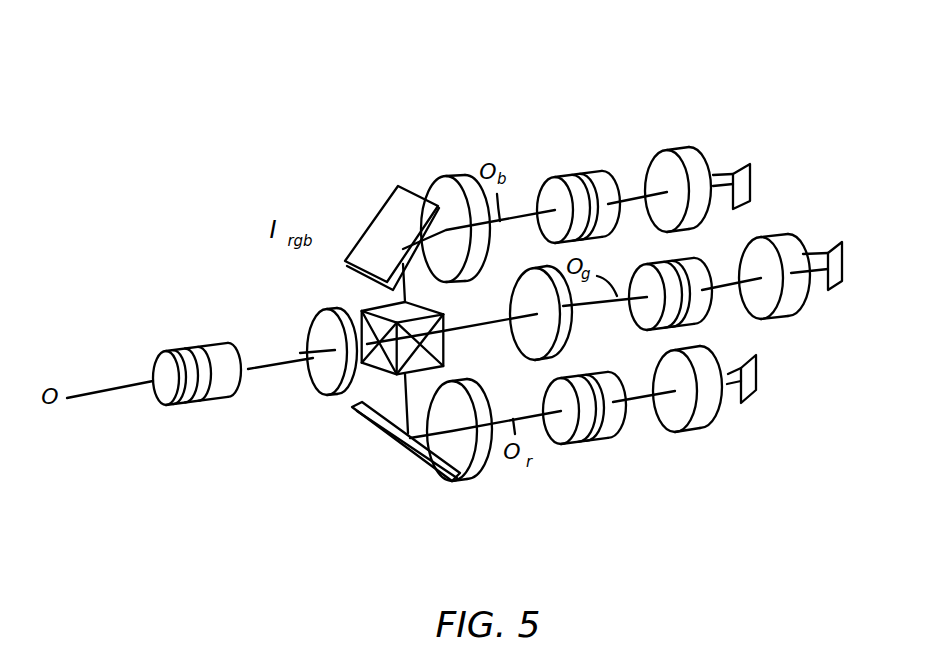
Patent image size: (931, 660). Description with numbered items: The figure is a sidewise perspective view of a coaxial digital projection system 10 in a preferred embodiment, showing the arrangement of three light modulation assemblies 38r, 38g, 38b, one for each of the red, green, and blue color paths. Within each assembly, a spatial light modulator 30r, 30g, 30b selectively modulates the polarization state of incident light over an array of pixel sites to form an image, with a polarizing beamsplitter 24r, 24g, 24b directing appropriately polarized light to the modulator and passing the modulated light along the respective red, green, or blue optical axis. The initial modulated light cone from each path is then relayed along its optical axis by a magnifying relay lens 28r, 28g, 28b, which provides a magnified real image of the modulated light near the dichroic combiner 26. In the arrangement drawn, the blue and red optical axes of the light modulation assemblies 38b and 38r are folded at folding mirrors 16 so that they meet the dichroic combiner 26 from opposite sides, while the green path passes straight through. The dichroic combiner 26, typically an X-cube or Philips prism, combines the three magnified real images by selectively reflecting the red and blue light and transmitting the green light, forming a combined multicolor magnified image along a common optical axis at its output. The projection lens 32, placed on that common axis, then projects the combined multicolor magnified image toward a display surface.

The digital projection system 10 is at (278, 124).
The folding mirror 16 is at (390, 191).
The polarizing beamsplitter 24b is at (742, 146).
The polarizing beamsplitter 24g is at (825, 278).
The polarizing beamsplitter 24r is at (752, 388).
The dichroic combiner 26 is at (435, 336).
The magnifying relay lens 28b is at (606, 107).
The magnifying relay lens 28g is at (718, 318).
The magnifying relay lens 28r is at (466, 488).
The spatial light modulator 30b is at (711, 143).
The spatial light modulator 30g is at (804, 235).
The spatial light modulator 30r is at (727, 390).
The projection lens 32 is at (97, 308).
The light modulation assembly 38b is at (409, 83).
The light modulation assembly 38g is at (763, 192).
The light modulation assembly 38r is at (805, 491).